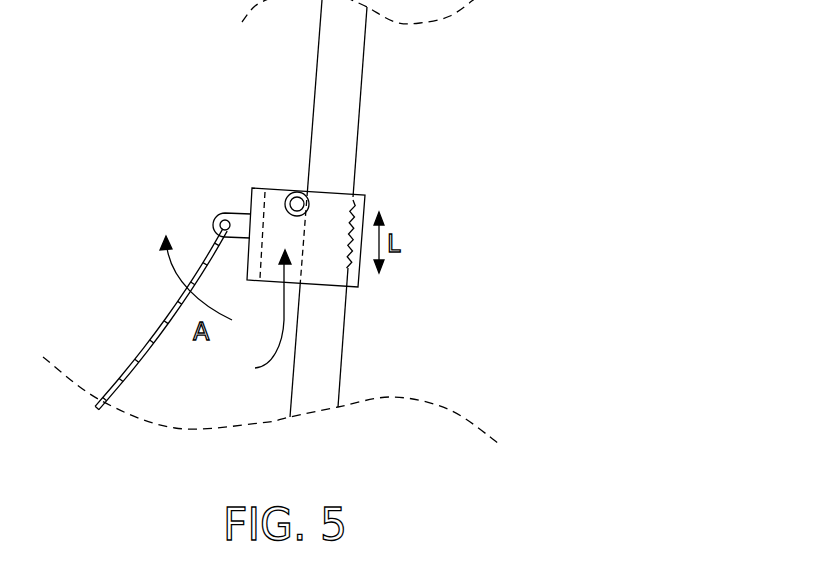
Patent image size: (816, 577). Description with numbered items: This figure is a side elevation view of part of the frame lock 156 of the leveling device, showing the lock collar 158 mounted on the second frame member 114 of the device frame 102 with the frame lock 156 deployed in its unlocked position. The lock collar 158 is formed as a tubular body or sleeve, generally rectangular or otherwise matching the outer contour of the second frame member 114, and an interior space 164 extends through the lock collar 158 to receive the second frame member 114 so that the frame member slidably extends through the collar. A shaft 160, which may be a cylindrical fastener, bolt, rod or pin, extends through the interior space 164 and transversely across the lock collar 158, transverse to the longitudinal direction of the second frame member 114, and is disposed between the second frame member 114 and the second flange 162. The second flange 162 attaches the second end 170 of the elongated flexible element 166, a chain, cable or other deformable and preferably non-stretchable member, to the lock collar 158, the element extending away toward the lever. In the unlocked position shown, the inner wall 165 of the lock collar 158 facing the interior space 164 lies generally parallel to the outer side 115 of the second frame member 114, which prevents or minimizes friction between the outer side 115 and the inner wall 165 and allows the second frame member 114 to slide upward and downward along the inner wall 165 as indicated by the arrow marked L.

The device frame 102 is at (292, 59).
The second frame member 114 is at (348, 67).
The outer side 115 is at (353, 272).
The frame lock 156 is at (145, 298).
The lock collar 158 is at (366, 198).
The shaft 160 is at (293, 192).
The second flange 162 is at (220, 213).
The interior space 164 is at (249, 318).
The inner wall 165 is at (350, 268).
The elongated flexible element 166 is at (137, 367).
The second end 170 is at (219, 232).